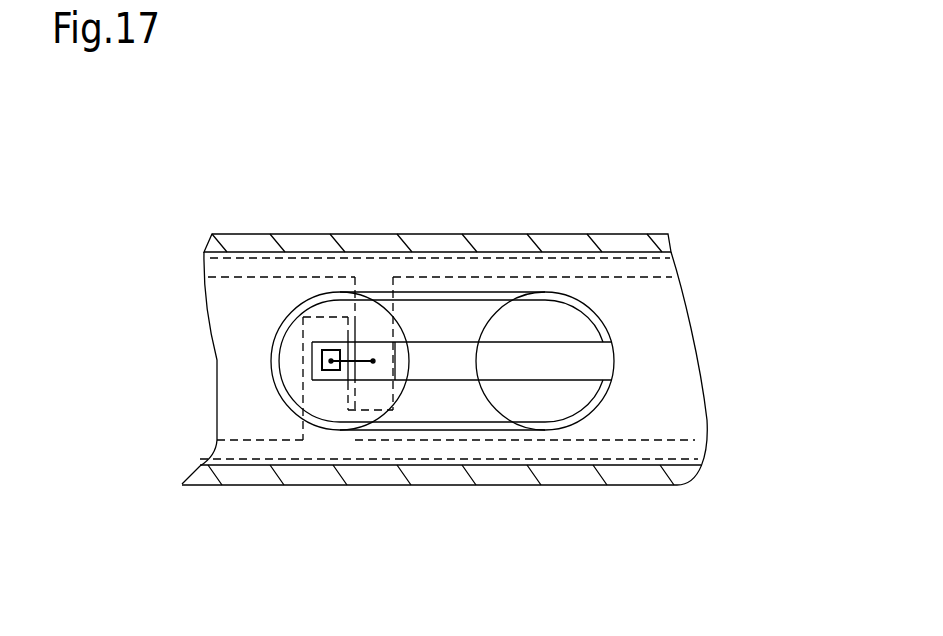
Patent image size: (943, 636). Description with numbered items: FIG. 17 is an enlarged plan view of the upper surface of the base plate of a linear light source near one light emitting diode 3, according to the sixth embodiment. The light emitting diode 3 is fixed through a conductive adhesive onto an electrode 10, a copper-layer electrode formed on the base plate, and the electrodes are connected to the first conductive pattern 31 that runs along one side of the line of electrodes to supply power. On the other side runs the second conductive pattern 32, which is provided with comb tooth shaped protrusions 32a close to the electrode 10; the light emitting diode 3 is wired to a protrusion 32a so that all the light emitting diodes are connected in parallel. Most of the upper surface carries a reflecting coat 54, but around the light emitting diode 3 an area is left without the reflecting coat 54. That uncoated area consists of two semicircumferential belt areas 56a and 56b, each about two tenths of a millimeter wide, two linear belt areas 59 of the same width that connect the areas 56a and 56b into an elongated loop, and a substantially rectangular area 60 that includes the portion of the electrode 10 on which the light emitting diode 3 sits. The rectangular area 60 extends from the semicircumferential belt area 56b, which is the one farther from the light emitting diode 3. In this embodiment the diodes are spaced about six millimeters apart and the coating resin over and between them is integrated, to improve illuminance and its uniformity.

The light emitting diode 3 is at (334, 350).
The electrode 10 is at (318, 332).
The first conductive pattern 31 is at (425, 445).
The second conductive pattern 32 is at (493, 270).
The comb tooth shaped protrusion 32a is at (376, 320).
The reflecting coat 54 is at (643, 407).
The semicircumferential belt area 56a is at (278, 323).
The semicircumferential belt area 56b is at (618, 332).
The linear belt area 59 is at (498, 298).
The substantially rectangular area 60 is at (443, 357).